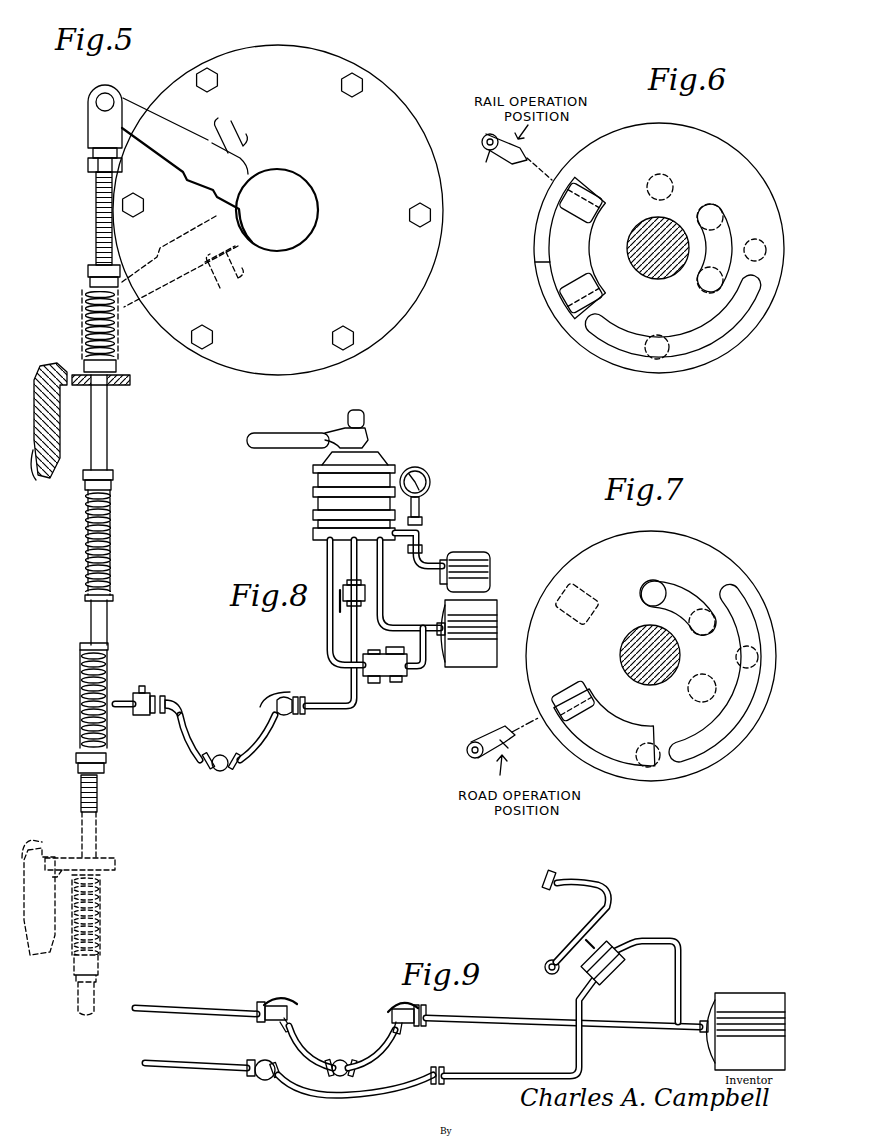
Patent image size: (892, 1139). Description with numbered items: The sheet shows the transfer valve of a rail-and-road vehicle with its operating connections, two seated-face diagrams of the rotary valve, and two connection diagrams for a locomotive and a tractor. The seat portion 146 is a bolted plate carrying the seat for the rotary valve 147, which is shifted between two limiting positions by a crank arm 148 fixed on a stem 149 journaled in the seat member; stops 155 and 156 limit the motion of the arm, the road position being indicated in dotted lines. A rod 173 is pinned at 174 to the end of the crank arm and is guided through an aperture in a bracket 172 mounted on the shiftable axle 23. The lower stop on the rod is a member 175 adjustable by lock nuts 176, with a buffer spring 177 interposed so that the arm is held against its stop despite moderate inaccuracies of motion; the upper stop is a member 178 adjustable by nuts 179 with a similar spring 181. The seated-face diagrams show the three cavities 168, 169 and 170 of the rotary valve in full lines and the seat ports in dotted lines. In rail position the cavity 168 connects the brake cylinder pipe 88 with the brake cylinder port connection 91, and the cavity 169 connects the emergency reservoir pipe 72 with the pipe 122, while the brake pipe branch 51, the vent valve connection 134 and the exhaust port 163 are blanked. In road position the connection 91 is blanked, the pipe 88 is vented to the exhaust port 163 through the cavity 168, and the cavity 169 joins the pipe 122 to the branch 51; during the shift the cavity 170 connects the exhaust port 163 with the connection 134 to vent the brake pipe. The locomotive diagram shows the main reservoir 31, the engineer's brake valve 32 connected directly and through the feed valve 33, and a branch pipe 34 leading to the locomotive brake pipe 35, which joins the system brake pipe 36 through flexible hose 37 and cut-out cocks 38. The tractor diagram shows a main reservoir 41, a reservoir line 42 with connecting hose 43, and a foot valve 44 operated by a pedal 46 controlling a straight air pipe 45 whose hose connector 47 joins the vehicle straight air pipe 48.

In FIG. 5, the seat portion 146 is at (317, 60).
In FIG. 5, the crank arm 148 is at (178, 135).
In FIG. 6, the crank arm 148 is at (498, 165).
In FIG. 7, the crank arm 148 is at (510, 748).
In FIG. 5, the stop 155 is at (233, 133).
In FIG. 5, the stop 156 is at (232, 282).
In FIG. 5, the pin 174 is at (96, 102).
In FIG. 5, the nuts 179 is at (86, 272).
In FIG. 5, the spring 181 is at (84, 303).
In FIG. 5, the stop member 178 is at (84, 366).
In FIG. 5, the bracket 172 is at (122, 385).
In FIG. 5, the rod 173 is at (98, 446).
In FIG. 5, the shiftable axle 23 is at (44, 478).
In FIG. 5, the stop member 175 is at (80, 646).
In FIG. 5, the buffer spring 177 is at (80, 696).
In FIG. 5, the lock nuts 176 is at (76, 762).
In FIG. 8, the engineer's brake valve 32 is at (312, 494).
In FIG. 8, the branch pipe 34 is at (350, 640).
In FIG. 8, the feed valve 33 is at (393, 678).
In FIG. 8, the main reservoir 31 is at (452, 665).
In FIG. 8, the brake pipe 36 is at (130, 692).
In FIG. 9, the brake pipe 36 is at (200, 1008).
In FIG. 8, the cut-out cock 38 is at (160, 698).
In FIG. 8, the flexible hose 37 is at (200, 745).
In FIG. 9, the flexible hose 37 is at (308, 1050).
In FIG. 8, the brake pipe 35 is at (322, 705).
In FIG. 6, the rotary valve 147 is at (722, 140).
In FIG. 7, the rotary valve 147 is at (718, 562).
In FIG. 6, the branch pipe 51 is at (658, 173).
In FIG. 7, the branch pipe 51 is at (664, 578).
In FIG. 6, the brake cylinder port connection 91 is at (571, 221).
In FIG. 7, the brake cylinder port connection 91 is at (558, 625).
In FIG. 6, the brake cylinder pipe 88 is at (570, 272).
In FIG. 7, the brake cylinder pipe 88 is at (584, 714).
In FIG. 6, the cavity 168 is at (550, 258).
In FIG. 7, the cavity 168 is at (620, 726).
In FIG. 6, the stem 149 is at (648, 275).
In FIG. 7, the stem 149 is at (622, 646).
In FIG. 6, the exhaust port 163 is at (668, 335).
In FIG. 7, the exhaust port 163 is at (658, 758).
In FIG. 6, the pipe 122 is at (722, 214).
In FIG. 7, the pipe 122 is at (700, 608).
In FIG. 6, the cavity 169 is at (733, 238).
In FIG. 7, the cavity 169 is at (683, 583).
In FIG. 6, the vent valve connection 134 is at (766, 251).
In FIG. 7, the vent valve connection 134 is at (753, 648).
In FIG. 6, the emergency reservoir pipe 72 is at (720, 274).
In FIG. 7, the emergency reservoir pipe 72 is at (706, 670).
In FIG. 6, the cavity 170 is at (733, 332).
In FIG. 7, the cavity 170 is at (745, 700).
In FIG. 9, the reservoir line 42 is at (510, 1020).
In FIG. 9, the connecting hose 43 is at (378, 1050).
In FIG. 9, the straight air pipe 45 is at (510, 1073).
In FIG. 9, the flexible hose connector 47 is at (370, 1095).
In FIG. 9, the straight air pipe 48 is at (188, 1065).
In FIG. 9, the pedal 46 is at (570, 943).
In FIG. 9, the foot valve 44 is at (612, 970).
In FIG. 9, the main reservoir 41 is at (736, 995).